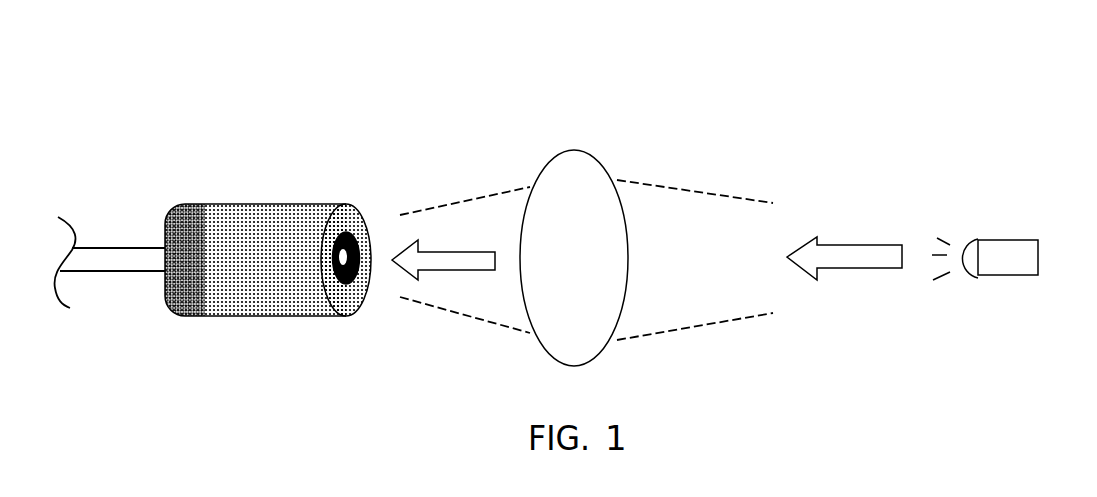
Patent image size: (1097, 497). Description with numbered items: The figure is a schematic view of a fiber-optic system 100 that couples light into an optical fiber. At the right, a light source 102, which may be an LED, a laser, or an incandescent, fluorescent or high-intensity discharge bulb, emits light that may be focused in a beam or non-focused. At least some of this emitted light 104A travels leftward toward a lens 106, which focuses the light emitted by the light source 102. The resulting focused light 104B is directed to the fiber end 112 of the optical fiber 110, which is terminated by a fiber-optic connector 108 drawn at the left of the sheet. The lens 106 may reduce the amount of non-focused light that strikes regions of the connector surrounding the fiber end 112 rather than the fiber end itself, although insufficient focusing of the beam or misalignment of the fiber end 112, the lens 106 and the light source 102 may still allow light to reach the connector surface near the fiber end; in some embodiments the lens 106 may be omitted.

The fiber-optic system 100 is at (840, 34).
The light source 102 is at (998, 248).
The emitted light 104A is at (807, 248).
The focused light 104B is at (407, 243).
The lens 106 is at (588, 190).
The fiber-optic connector 108 is at (213, 288).
The optical fiber 110 is at (87, 252).
The fiber end 112 is at (351, 232).